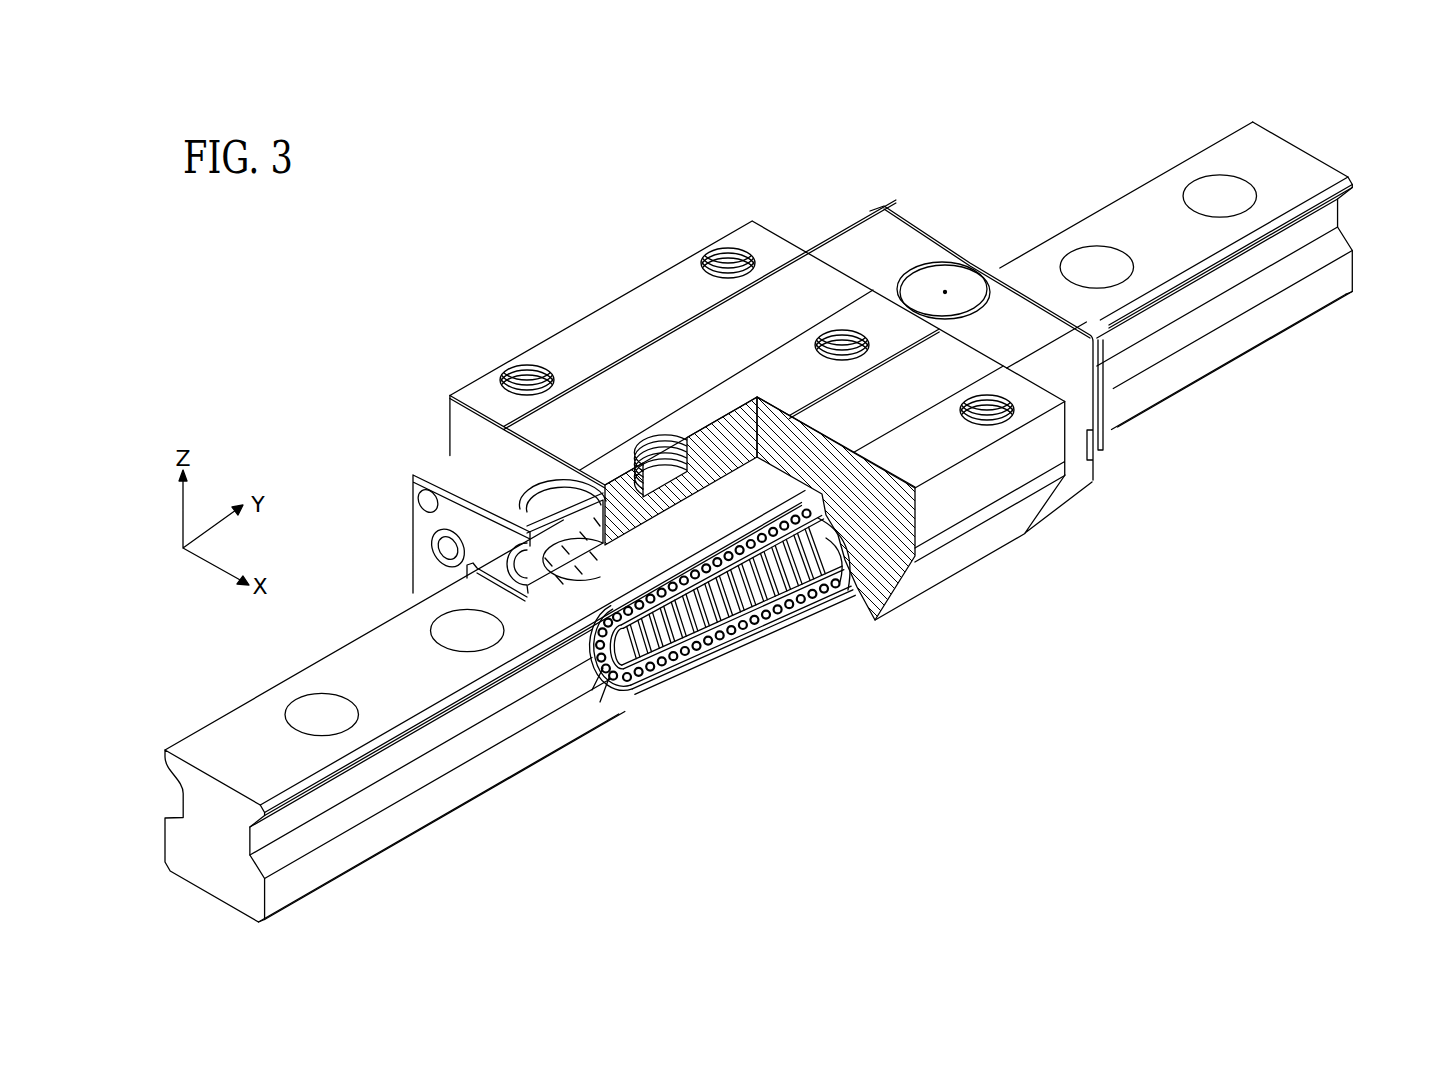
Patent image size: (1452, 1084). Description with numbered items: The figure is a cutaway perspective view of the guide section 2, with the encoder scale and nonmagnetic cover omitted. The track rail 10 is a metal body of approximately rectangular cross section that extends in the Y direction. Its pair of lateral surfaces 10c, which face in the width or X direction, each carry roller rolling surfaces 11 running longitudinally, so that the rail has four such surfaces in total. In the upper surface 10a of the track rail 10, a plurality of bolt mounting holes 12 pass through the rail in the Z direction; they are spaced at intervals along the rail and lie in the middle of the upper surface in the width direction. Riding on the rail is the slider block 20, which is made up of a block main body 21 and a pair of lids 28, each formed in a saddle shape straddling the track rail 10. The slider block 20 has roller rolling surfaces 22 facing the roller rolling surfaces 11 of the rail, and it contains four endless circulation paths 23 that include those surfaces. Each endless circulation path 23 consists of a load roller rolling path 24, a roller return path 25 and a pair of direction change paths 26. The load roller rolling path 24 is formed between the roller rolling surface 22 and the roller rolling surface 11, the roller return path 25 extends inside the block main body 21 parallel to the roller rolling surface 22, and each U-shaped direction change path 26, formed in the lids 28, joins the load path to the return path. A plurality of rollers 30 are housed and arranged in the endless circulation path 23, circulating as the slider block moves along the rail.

The guide section 2 is at (392, 261).
The track rail 10 is at (787, 507).
The upper surface 10a is at (232, 726).
The lateral surfaces 10c is at (350, 778).
The roller rolling surfaces 11 is at (1125, 363).
The bolt mounting holes 12 is at (1208, 195).
The slider block 20 is at (584, 292).
The block main body 21 is at (676, 285).
The roller rolling surfaces 22 is at (906, 598).
The endless circulation paths 23 is at (1097, 674).
The load roller rolling path 24 is at (1117, 588).
The roller return path 25 is at (842, 580).
The direction change paths 26 is at (620, 697).
The lids 28 is at (870, 246).
The rollers 30 is at (757, 633).